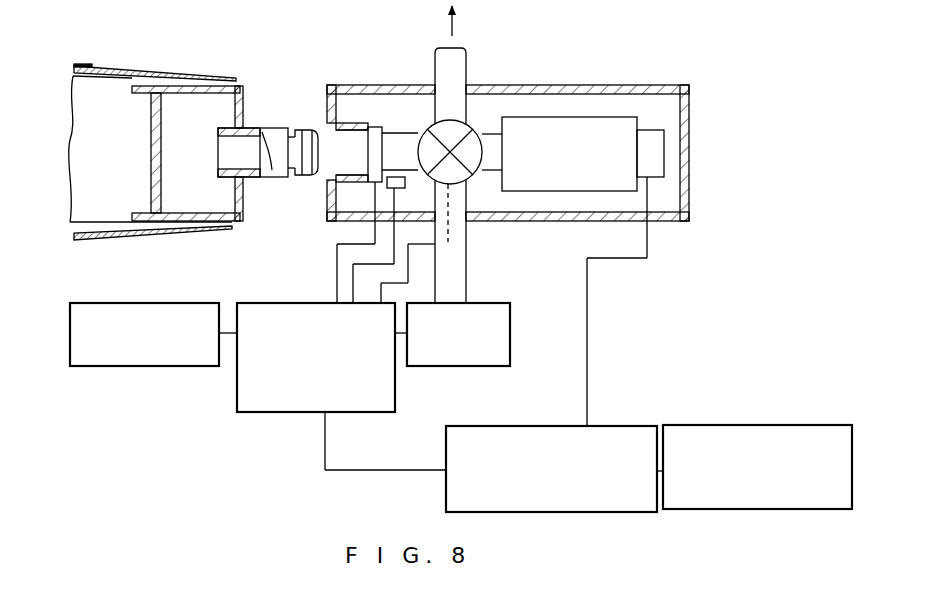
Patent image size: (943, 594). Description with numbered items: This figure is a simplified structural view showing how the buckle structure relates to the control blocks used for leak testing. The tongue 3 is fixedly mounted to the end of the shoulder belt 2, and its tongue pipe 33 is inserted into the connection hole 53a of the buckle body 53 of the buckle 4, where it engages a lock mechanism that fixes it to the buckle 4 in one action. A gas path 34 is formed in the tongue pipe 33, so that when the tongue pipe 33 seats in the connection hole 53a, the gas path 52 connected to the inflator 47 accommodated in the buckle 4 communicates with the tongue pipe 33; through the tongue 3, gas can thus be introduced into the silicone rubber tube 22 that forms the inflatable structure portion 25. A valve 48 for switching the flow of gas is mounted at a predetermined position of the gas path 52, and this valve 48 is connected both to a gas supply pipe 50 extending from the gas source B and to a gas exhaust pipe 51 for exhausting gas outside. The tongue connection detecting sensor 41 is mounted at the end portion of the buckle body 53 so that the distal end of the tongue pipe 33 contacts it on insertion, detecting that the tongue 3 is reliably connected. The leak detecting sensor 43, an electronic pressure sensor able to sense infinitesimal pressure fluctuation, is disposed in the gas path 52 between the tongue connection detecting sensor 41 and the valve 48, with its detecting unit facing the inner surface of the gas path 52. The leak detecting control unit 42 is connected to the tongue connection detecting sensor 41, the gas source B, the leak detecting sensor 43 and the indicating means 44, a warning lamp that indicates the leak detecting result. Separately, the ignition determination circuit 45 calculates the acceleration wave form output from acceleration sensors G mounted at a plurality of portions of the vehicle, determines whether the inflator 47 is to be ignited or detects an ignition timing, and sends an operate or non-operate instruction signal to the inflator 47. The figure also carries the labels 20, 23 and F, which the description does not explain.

The shoulder belt 2 is at (82, 250).
The tongue 3 is at (252, 80).
The buckle 4 is at (600, 72).
The lower film layer 20 is at (90, 66).
The silicone rubber tube 22 is at (64, 124).
The upper layer 23 is at (80, 66).
The inflatable structure portion 25 is at (103, 62).
The tongue pipe 33 is at (283, 134).
The gas path 34 is at (194, 244).
The tongue connection detecting sensor 41 is at (376, 126).
The leak detecting control unit 42 is at (237, 414).
The leak detecting sensor 43 is at (468, 212).
The indicating means 44 is at (68, 367).
The ignition determination circuit 45 is at (624, 513).
The inflator 47 is at (640, 116).
The valve 48 is at (476, 140).
The gas supply pipe 50 is at (468, 264).
The gas exhaust pipe 51 is at (467, 58).
The gas path 52 is at (410, 130).
The buckle body 53 is at (344, 122).
The connection hole 53a is at (346, 160).
The gas source B is at (434, 368).
The filter plate F is at (150, 142).
The acceleration sensors G is at (769, 511).